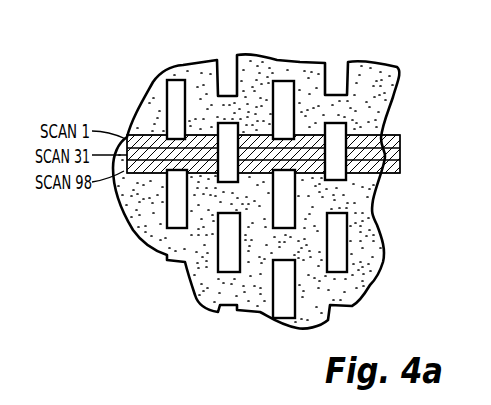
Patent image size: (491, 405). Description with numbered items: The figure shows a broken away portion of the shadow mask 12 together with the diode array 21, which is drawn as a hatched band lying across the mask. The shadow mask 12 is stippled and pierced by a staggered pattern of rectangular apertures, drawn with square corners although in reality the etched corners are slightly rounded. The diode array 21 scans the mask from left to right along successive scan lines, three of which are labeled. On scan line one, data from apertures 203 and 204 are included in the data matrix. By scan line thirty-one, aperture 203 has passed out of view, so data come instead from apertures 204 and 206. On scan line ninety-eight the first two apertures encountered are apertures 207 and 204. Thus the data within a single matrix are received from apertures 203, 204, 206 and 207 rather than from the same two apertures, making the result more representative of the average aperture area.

The shadow mask 12 is at (393, 38).
The diode array 21 is at (394, 135).
The aperture 203 is at (167, 103).
The aperture 204 is at (240, 135).
The aperture 206 is at (372, 182).
The aperture 207 is at (166, 226).